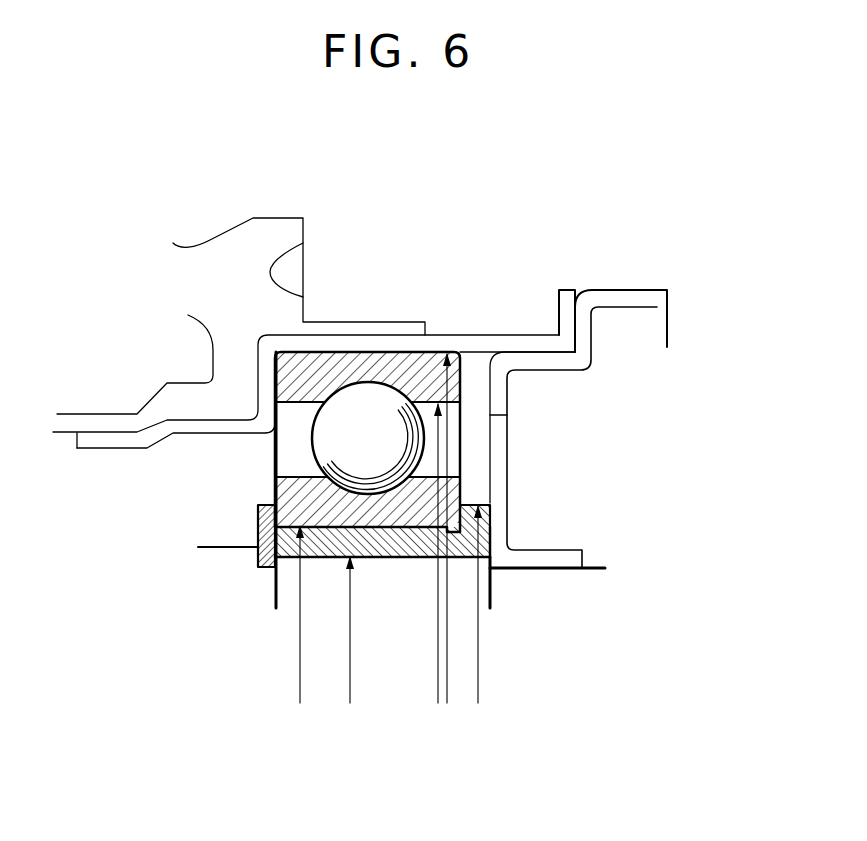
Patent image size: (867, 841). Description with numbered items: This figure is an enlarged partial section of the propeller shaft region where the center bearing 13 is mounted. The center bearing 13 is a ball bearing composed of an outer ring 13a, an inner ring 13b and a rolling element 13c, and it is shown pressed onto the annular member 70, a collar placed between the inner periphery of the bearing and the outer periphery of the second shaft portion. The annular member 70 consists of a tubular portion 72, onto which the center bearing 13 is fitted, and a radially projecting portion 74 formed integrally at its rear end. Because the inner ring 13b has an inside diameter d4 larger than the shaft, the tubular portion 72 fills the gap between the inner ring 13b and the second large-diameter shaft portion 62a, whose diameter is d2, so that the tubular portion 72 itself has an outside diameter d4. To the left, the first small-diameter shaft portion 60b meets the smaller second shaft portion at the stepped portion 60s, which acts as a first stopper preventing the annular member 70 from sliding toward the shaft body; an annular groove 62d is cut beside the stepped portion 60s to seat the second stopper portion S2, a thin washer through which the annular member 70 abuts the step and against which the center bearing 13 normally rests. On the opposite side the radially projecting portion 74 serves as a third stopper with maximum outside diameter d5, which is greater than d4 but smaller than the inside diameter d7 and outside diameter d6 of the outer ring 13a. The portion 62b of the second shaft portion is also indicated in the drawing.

The center bearing 13 is at (324, 379).
The outer ring 13a is at (431, 360).
The inner ring 13b is at (303, 500).
The rolling element (ball) 13c is at (373, 395).
The second stopper portion S2 is at (263, 520).
The first small-diameter shaft portion 60b is at (210, 563).
The stepped portion 60s is at (250, 606).
The annular groove 62d is at (270, 583).
The second large-diameter shaft portion 62a is at (483, 600).
The bracket portion 62b is at (537, 587).
The annular member 70 is at (483, 533).
The tubular portion 72 is at (393, 550).
The radially projecting portion 74 is at (480, 513).
The diameter of second large-diameter shaft portion d2 is at (345, 703).
The inside diameter of inner ring d4 is at (295, 703).
The maximum outside diameter of radially projecting portion d5 is at (473, 703).
The outside diameter of outer ring d6 is at (442, 703).
The inside diameter of outer ring d7 is at (433, 703).